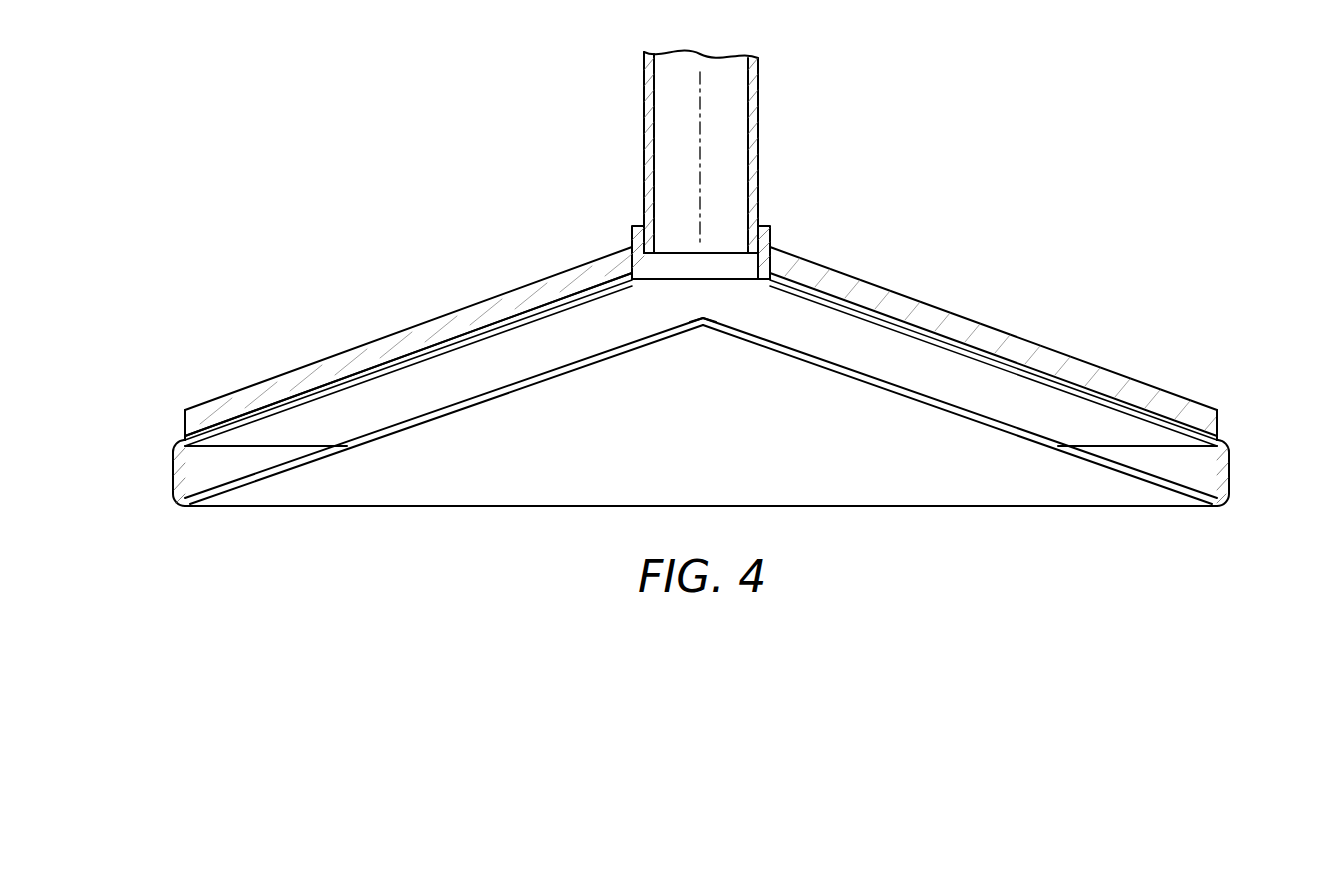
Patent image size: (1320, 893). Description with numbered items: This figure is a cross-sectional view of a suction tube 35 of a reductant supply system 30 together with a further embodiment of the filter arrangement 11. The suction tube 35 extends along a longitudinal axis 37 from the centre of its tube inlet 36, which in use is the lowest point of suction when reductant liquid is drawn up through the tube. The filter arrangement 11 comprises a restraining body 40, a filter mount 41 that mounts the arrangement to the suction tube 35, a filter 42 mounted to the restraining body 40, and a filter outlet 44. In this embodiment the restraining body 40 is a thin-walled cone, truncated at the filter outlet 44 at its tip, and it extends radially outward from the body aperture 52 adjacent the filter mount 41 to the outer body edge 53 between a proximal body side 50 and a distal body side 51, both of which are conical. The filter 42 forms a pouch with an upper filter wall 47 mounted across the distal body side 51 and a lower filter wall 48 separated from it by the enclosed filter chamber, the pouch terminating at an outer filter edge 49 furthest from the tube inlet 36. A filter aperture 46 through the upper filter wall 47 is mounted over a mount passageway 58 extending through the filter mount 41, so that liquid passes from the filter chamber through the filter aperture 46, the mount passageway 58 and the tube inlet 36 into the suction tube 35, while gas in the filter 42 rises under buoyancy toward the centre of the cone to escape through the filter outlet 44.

The filter arrangement 11 is at (240, 272).
The reductant supply system 30 is at (452, 73).
The suction tube 35 is at (760, 93).
The tube inlet 36 is at (731, 243).
The longitudinal axis 37 is at (700, 91).
The restraining body 40 is at (345, 356).
The filter mount 41 is at (632, 232).
The filter 42 is at (1102, 491).
The filter outlet 44 is at (700, 284).
The filter aperture 46 is at (660, 284).
The upper filter wall 47 is at (268, 410).
The lower filter wall 48 is at (278, 476).
The outer filter edge 49 is at (173, 471).
The proximal body side 50 is at (418, 322).
The distal body side 51 is at (507, 321).
The body aperture 52 is at (773, 262).
The outer body edge 53 is at (183, 423).
The mount passageway 58 is at (738, 284).